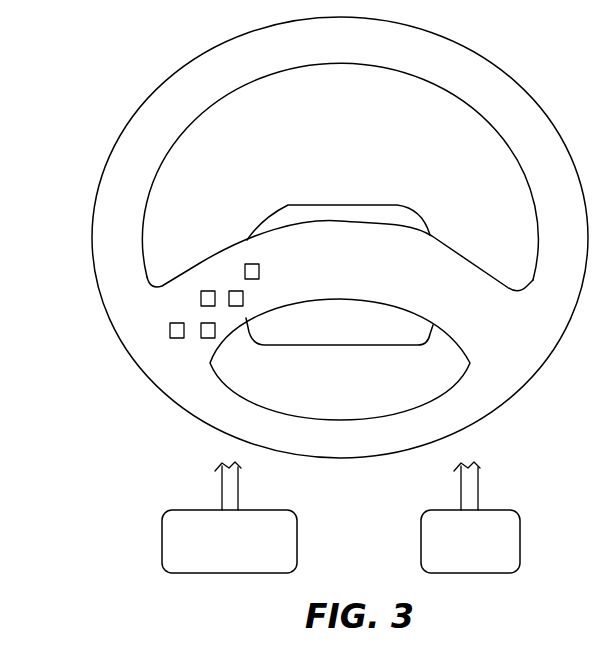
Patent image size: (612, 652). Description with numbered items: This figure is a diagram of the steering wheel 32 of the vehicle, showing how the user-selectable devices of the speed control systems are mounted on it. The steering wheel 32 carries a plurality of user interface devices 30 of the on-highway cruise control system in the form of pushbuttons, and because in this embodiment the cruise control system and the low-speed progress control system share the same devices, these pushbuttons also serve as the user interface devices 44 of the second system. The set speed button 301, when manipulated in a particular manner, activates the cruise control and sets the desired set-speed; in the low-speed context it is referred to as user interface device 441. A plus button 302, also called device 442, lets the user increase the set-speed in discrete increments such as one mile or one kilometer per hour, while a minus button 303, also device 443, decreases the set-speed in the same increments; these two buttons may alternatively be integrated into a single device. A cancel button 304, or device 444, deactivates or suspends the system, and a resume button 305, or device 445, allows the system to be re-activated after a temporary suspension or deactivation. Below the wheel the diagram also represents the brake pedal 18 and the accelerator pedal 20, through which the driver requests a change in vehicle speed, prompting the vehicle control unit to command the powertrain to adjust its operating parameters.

The steering wheel 32 is at (512, 80).
The user interface devices 30 is at (209, 275).
The user interface devices 44 is at (209, 275).
The set speed button 301 is at (286, 234).
The user interface device 441 is at (235, 290).
The "+" button 302 is at (195, 253).
The user interface device 442 is at (201, 290).
The "−" button 303 is at (275, 355).
The user interface device 443 is at (213, 338).
The cancel button 304 is at (308, 267).
The user interface device 444 is at (260, 271).
The resume button 305 is at (115, 344).
The user interface device 445 is at (169, 330).
The brake pedal 18 is at (229, 517).
The accelerator pedal 20 is at (470, 517).